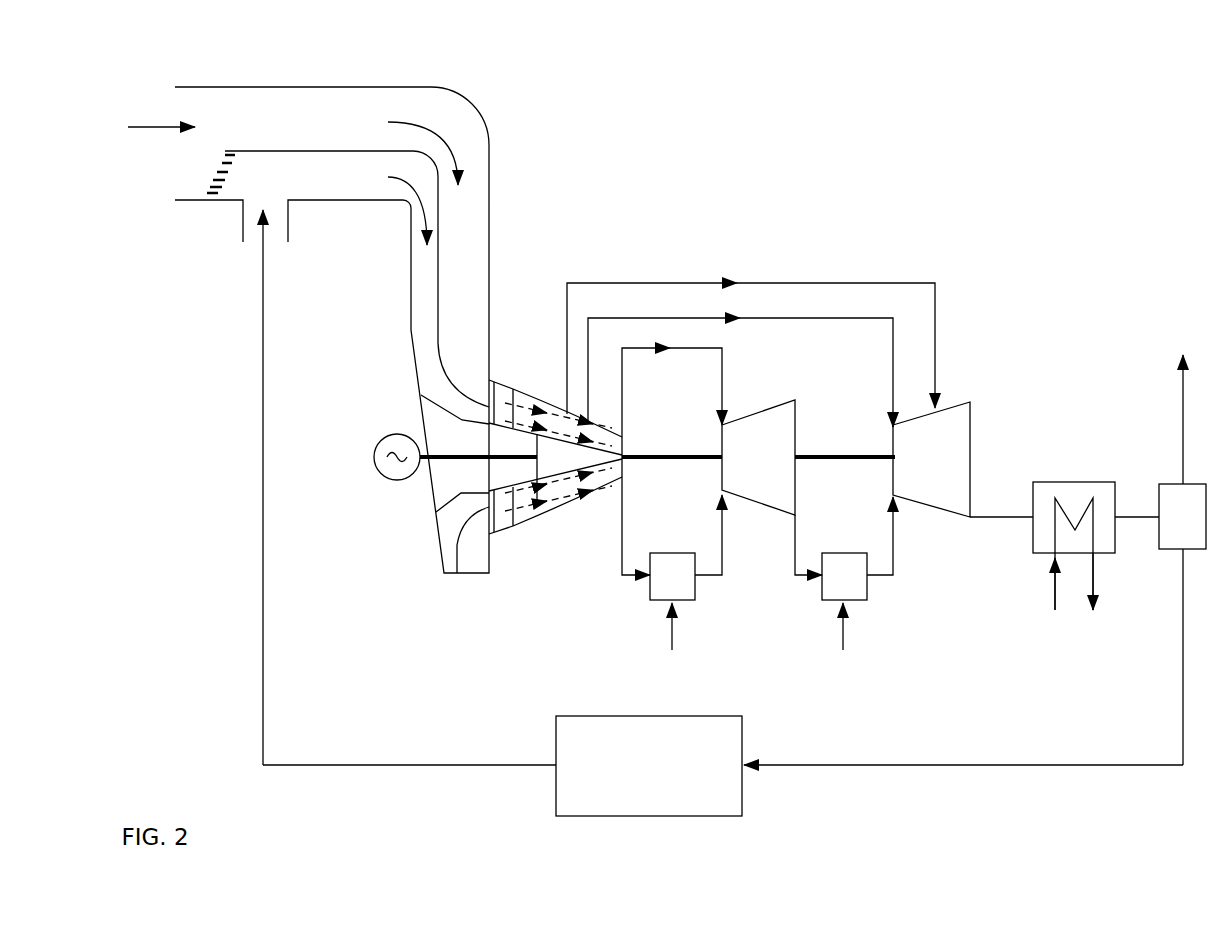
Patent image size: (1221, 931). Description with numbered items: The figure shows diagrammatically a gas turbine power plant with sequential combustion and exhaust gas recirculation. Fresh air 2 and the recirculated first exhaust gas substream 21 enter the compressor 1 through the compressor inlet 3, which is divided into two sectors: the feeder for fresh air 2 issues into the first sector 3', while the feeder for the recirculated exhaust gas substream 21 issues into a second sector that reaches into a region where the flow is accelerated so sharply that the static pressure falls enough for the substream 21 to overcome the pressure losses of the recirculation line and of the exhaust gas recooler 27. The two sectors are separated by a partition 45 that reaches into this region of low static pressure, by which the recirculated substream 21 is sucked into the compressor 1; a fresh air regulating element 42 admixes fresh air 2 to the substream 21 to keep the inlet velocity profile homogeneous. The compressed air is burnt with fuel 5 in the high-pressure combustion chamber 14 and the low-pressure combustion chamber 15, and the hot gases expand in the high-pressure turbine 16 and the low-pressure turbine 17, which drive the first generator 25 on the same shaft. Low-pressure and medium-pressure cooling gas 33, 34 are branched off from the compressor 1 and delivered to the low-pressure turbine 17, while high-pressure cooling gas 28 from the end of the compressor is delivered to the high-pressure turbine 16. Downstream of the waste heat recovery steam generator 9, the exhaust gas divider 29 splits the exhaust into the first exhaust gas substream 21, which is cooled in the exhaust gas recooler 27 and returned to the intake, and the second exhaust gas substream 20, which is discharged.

The compressor 1 is at (570, 505).
The fresh air 2 is at (150, 128).
The compressor inlet 3 is at (348, 330).
The first sector of the compressor inlet 3' is at (462, 561).
The fuel 5 is at (758, 644).
The waste heat recovery steam generator 9 is at (1073, 482).
The high-pressure combustion chamber 14 is at (661, 590).
The low-pressure combustion chamber 15 is at (832, 590).
The high-pressure turbine 16 is at (745, 470).
The low-pressure turbine 17 is at (920, 472).
The second exhaust gas substream 20 is at (1181, 424).
The first exhaust gas substream 21 is at (397, 188).
The first generator 25 is at (398, 472).
The exhaust gas recooler 27 is at (635, 780).
The high-pressure cooling gas 28 is at (688, 348).
The exhaust gas divider 29 is at (1170, 530).
The low-pressure cooling gas 33 is at (859, 283).
The medium-pressure cooling gas 34 is at (774, 318).
The fresh air regulating element 42 is at (228, 152).
The partition 45 is at (437, 277).